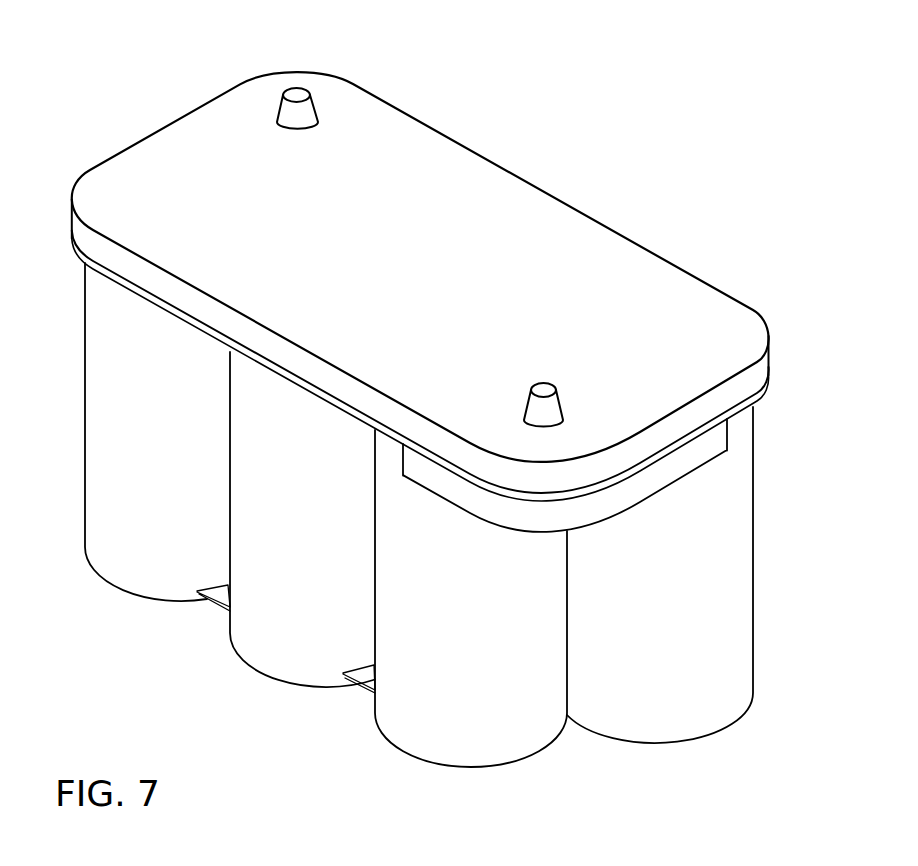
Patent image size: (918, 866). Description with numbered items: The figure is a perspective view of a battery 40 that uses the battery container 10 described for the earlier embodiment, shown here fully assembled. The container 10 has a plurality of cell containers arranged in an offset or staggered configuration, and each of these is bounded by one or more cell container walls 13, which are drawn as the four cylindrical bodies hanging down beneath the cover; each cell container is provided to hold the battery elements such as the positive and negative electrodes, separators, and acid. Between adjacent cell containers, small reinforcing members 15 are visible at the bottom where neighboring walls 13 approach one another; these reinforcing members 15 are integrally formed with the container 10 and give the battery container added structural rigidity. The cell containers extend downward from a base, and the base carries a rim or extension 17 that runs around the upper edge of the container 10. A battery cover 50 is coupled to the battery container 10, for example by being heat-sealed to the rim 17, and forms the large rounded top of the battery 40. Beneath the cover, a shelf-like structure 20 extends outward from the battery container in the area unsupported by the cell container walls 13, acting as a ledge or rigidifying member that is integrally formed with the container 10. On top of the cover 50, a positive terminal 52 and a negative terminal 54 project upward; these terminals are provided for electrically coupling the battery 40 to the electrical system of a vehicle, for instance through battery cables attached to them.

The container 10 is at (435, 421).
The cell container wall 13 is at (110, 527).
The reinforcing member 15 is at (218, 602).
The rim 17 is at (197, 333).
The structure 20 is at (625, 491).
The battery 40 is at (420, 287).
The battery cover 50 is at (527, 178).
The positive terminal 52 is at (283, 112).
The negative terminal 54 is at (551, 406).